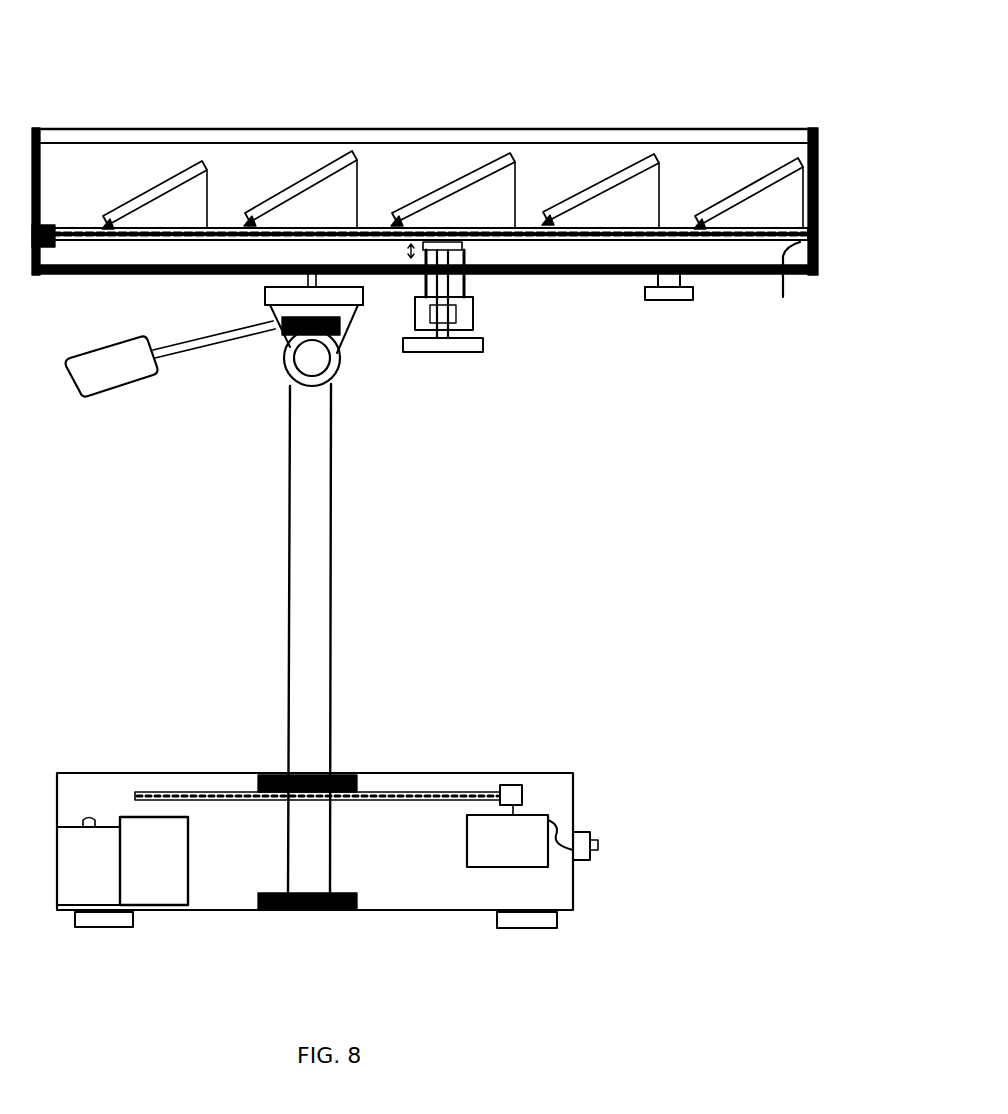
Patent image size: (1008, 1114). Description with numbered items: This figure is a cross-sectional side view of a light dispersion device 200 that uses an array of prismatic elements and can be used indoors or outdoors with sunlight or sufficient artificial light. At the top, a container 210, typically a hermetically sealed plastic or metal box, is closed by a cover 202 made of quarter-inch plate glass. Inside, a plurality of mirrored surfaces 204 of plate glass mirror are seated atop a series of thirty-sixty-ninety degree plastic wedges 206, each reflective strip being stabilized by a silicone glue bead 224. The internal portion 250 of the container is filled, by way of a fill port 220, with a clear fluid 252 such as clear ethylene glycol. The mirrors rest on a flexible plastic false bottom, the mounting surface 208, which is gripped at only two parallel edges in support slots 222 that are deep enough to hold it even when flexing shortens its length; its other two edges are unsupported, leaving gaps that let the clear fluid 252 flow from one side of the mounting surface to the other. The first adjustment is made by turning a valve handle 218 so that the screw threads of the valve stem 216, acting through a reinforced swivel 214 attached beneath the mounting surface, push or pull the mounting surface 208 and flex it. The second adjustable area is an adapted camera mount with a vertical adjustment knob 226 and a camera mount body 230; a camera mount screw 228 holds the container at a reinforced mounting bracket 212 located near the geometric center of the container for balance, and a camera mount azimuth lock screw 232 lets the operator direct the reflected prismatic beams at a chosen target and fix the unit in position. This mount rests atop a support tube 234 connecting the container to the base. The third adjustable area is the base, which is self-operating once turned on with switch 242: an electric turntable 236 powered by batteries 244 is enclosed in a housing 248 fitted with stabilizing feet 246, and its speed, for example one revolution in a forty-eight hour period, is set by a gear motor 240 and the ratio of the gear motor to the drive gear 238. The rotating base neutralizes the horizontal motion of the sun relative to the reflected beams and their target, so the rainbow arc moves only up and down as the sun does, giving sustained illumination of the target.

The light dispersion device 200 is at (166, 32).
The cover 202 is at (111, 128).
The mirrored surfaces 204 is at (145, 190).
The plastic wedges 206 is at (207, 215).
The mounting surface 208 is at (370, 224).
The container 210 is at (75, 275).
The reinforced mounting bracket 212 is at (265, 288).
The reinforced swivel 214 is at (462, 246).
The valve stem 216 is at (473, 313).
The valve handle 218 is at (484, 345).
The fill port 220 is at (722, 313).
The support slots 222 is at (793, 288).
The silicone glue bead 224 is at (530, 223).
The vertical adjustment knob 226 is at (140, 380).
The camera mount screw 228 is at (275, 335).
The camera mount body 230 is at (290, 372).
The camera mount azimuth lock screw 232 is at (328, 357).
The support tube 234 is at (335, 477).
The electric turntable 236 is at (268, 773).
The drive gear 238 is at (420, 794).
The gear motor 240 is at (540, 813).
The switch 242 is at (601, 843).
The batteries 244 is at (188, 863).
The stabilizing feet 246 is at (112, 928).
The housing 248 is at (443, 912).
The internal portion 250 is at (740, 155).
The clear fluid 252 is at (818, 185).